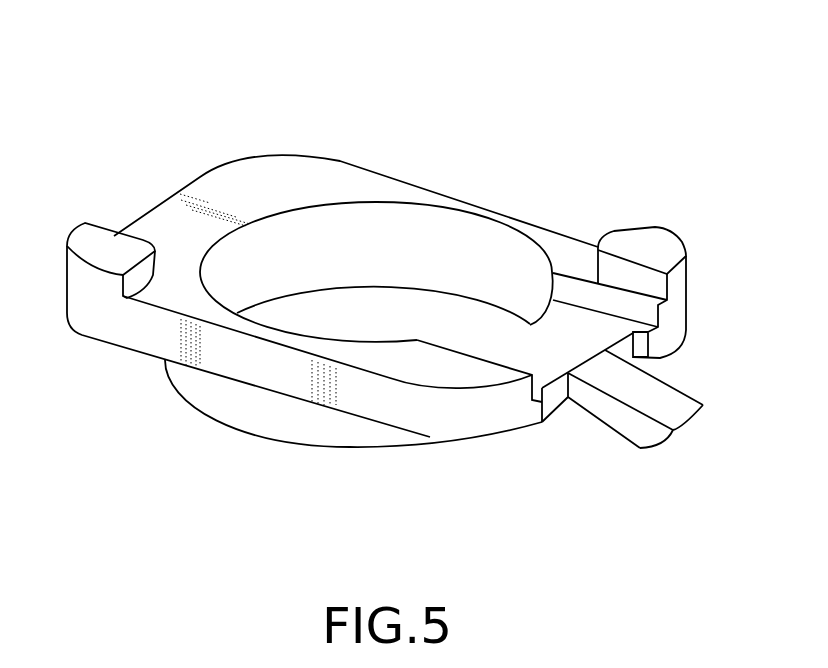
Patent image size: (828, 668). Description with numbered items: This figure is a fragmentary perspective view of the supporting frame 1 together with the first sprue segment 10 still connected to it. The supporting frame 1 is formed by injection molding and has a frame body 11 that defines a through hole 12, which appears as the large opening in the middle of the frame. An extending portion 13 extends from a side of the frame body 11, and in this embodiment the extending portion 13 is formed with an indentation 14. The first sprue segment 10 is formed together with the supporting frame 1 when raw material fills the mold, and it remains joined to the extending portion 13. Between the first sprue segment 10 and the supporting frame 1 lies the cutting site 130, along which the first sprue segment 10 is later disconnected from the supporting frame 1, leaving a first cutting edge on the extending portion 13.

The supporting frame 1 is at (385, 284).
The first sprue segment 10 is at (586, 388).
The frame body 11 is at (333, 173).
The through hole 12 is at (453, 313).
The extending portion 13 is at (473, 378).
The cutting site 130 is at (593, 362).
The indentation 14 is at (627, 302).